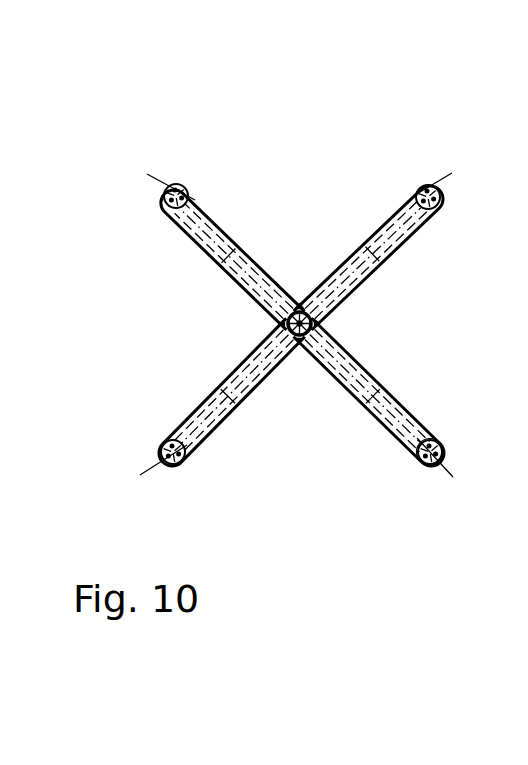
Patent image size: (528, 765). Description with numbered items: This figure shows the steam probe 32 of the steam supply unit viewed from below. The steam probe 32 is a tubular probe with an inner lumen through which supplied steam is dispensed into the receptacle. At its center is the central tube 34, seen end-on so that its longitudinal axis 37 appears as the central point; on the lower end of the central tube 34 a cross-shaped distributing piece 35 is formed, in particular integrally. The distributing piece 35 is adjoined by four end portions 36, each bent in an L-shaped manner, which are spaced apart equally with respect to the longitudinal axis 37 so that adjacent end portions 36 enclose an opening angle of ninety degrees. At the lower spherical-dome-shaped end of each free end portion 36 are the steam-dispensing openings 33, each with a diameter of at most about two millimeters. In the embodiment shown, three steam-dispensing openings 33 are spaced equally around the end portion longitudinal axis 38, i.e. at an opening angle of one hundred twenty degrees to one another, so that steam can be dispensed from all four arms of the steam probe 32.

The steam probe 32 is at (288, 153).
The steam-dispensing openings 33 is at (192, 197).
The central tube 34 is at (331, 283).
The cross-shaped distributing piece 35 is at (247, 365).
The end portions 36 is at (167, 183).
The longitudinal axis of the central tube 37 is at (312, 348).
The end portion longitudinal axis 38 is at (438, 441).